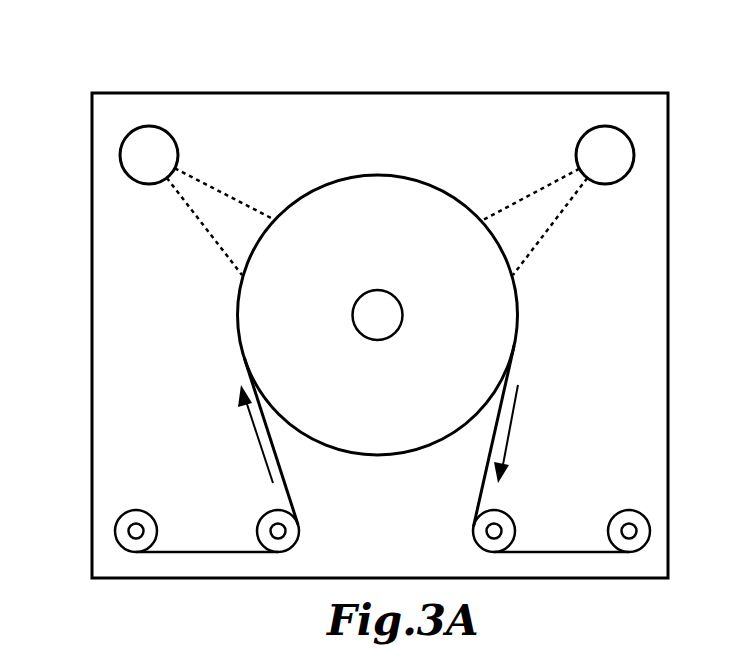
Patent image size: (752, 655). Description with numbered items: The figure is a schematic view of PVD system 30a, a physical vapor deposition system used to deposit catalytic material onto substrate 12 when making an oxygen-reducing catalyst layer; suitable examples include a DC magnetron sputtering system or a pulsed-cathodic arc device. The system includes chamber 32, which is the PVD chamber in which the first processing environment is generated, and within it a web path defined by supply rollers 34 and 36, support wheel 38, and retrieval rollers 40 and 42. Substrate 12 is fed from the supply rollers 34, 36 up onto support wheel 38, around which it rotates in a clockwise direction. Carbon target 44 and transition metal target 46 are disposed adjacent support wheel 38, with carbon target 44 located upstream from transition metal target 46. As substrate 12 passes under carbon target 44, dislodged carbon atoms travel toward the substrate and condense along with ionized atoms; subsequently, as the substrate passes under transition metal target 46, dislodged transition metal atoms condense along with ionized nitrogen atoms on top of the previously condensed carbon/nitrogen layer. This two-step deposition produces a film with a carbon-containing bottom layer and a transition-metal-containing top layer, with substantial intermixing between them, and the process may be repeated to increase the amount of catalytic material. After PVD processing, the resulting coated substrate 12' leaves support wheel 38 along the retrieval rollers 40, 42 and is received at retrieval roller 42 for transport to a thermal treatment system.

The PVD system 30a is at (552, 64).
The chamber 32 is at (91, 213).
The support wheel 38 is at (376, 187).
The carbon target 44 is at (170, 134).
The transition metal target 46 is at (585, 135).
The supply roller 34 is at (139, 509).
The supply roller 36 is at (267, 512).
The retrieval roller 40 is at (507, 515).
The retrieval roller 42 is at (622, 511).
The substrate 12 is at (245, 455).
The coated substrate 12' is at (522, 449).